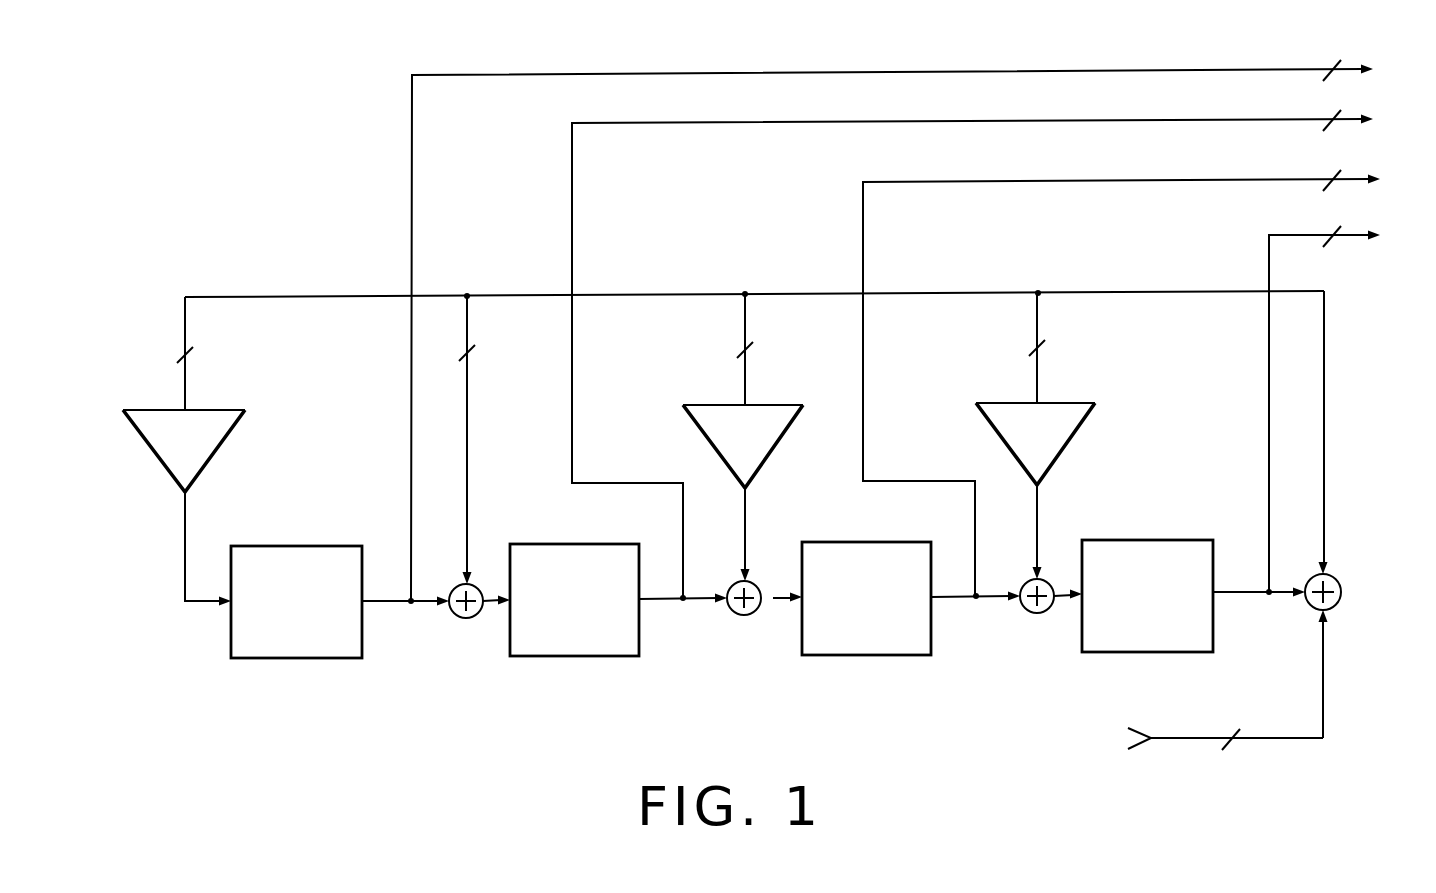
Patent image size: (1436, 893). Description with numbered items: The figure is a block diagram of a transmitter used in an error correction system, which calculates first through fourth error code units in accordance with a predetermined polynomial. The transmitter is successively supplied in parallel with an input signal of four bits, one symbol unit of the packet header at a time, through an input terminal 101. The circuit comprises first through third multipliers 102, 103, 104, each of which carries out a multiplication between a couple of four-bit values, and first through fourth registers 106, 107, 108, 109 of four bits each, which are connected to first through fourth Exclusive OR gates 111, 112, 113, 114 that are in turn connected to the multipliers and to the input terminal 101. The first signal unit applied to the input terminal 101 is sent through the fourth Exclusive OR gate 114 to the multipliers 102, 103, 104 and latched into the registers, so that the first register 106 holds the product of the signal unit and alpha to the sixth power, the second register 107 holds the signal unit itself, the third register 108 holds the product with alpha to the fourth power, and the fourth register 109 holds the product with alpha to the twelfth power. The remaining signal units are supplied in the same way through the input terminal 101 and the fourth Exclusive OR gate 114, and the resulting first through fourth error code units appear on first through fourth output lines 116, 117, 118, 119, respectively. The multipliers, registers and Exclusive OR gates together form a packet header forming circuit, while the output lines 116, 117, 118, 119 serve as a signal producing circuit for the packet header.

The input terminal 101 is at (1163, 740).
The first multiplier 102 is at (1005, 450).
The second multiplier 103 is at (715, 453).
The third multiplier 104 is at (157, 462).
The first register 106 is at (295, 658).
The second register 107 is at (573, 656).
The third register 108 is at (863, 655).
The fourth register 109 is at (1150, 652).
The first Exclusive OR gate 111 is at (466, 618).
The second Exclusive OR gate 112 is at (744, 615).
The third Exclusive OR gate 113 is at (1037, 613).
The fourth Exclusive OR gate 114 is at (1340, 600).
The first output line 116 is at (1296, 235).
The second output line 117 is at (935, 182).
The third output line 118 is at (648, 123).
The fourth output line 119 is at (468, 75).